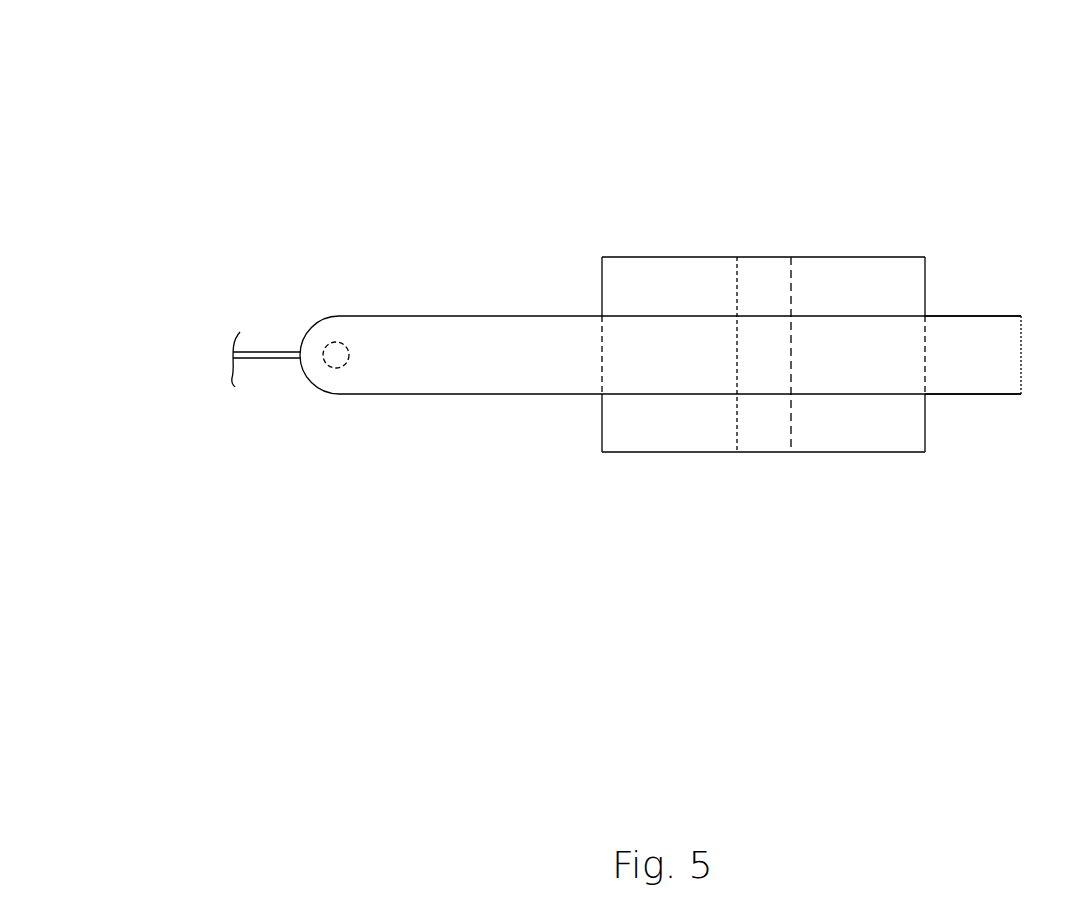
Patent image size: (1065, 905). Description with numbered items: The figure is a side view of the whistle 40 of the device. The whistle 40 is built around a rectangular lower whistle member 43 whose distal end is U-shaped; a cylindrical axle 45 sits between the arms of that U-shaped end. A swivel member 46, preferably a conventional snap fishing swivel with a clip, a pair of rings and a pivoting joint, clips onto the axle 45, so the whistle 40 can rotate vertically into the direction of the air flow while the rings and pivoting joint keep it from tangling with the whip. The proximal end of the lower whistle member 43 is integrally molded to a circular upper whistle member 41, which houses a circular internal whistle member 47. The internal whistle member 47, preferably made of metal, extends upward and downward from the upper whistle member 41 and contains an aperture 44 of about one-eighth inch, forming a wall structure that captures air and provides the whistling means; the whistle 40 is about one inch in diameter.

The whistle 40 is at (122, 111).
The upper whistle member 41 is at (955, 352).
The lower whistle member 43 is at (454, 312).
The aperture 44 is at (792, 282).
The axle 45 is at (336, 357).
The swivel member 46 is at (269, 353).
The internal whistle member 47 is at (668, 282).